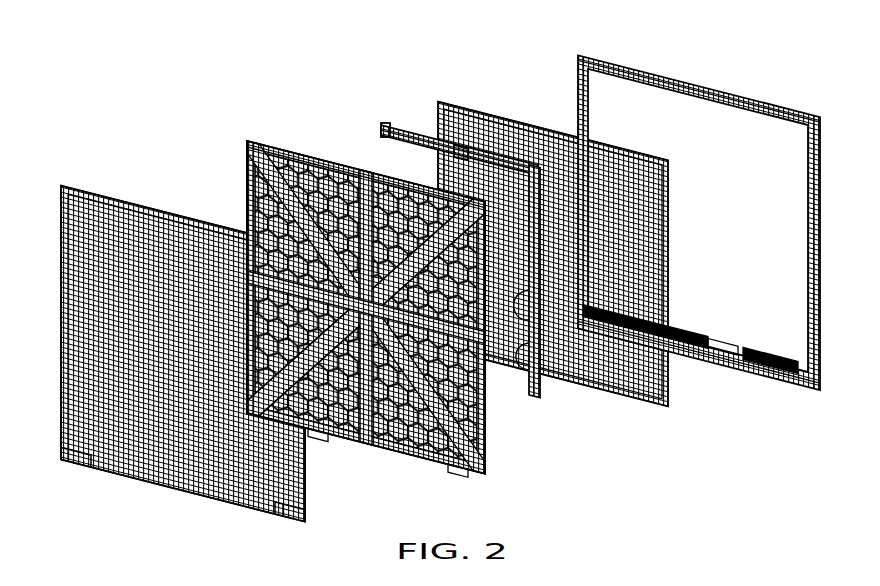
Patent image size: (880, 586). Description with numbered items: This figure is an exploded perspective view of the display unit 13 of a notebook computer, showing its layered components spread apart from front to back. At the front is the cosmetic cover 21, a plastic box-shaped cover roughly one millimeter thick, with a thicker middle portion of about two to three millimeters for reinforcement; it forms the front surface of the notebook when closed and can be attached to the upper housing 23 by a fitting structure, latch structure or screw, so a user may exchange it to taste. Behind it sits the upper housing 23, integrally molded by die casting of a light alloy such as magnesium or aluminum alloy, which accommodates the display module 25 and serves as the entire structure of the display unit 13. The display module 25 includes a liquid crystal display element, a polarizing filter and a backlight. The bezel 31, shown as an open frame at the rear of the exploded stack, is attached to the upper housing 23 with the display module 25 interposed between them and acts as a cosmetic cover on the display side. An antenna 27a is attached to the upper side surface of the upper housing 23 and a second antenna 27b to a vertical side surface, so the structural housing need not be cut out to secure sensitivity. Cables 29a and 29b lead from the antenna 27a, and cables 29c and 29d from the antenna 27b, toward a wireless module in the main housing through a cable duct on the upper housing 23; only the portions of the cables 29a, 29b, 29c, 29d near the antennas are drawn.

The display unit 13 is at (352, 66).
The cosmetic cover 21 is at (100, 183).
The upper housing 23 is at (262, 130).
The display module 25 is at (486, 106).
The antenna 27a is at (386, 116).
The antenna 27b is at (534, 383).
The cable 29a is at (382, 126).
The cable 29b is at (452, 146).
The cable 29c is at (500, 290).
The cable 29d is at (512, 348).
The bezel 31 is at (698, 78).